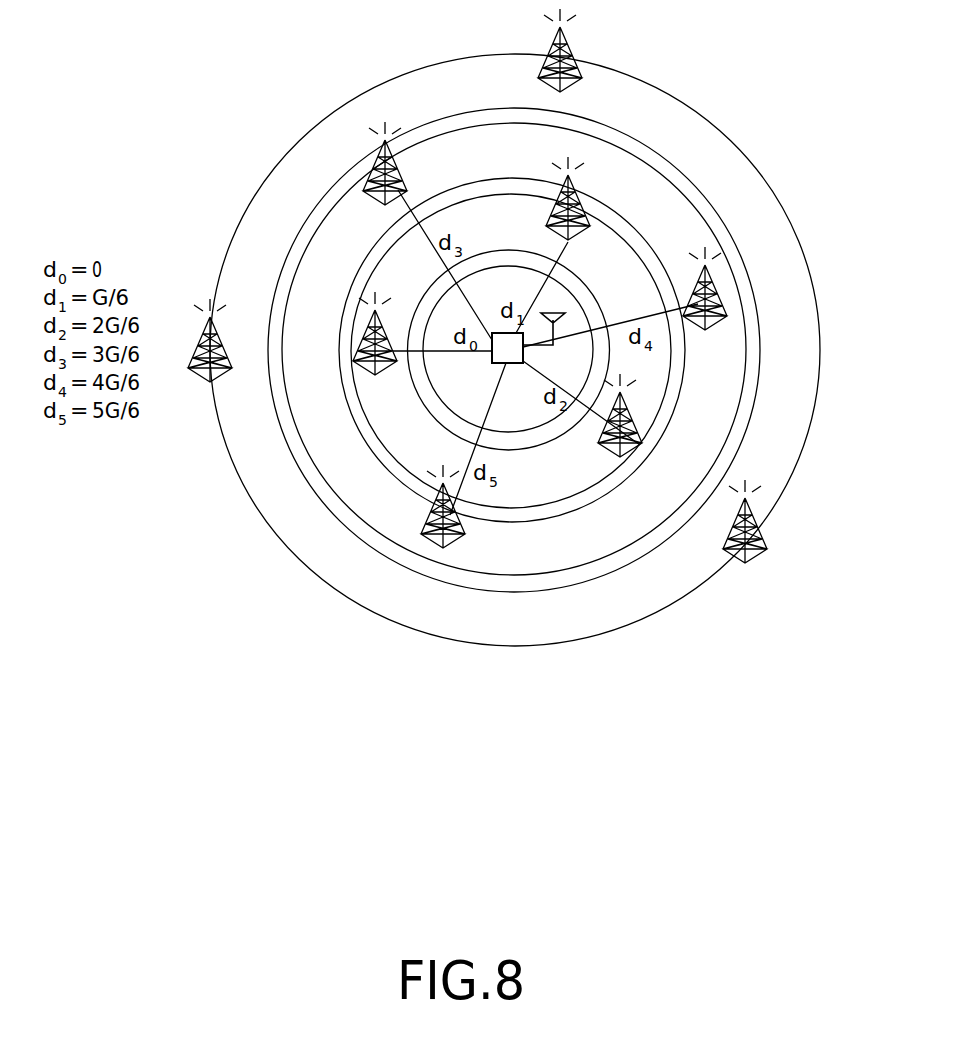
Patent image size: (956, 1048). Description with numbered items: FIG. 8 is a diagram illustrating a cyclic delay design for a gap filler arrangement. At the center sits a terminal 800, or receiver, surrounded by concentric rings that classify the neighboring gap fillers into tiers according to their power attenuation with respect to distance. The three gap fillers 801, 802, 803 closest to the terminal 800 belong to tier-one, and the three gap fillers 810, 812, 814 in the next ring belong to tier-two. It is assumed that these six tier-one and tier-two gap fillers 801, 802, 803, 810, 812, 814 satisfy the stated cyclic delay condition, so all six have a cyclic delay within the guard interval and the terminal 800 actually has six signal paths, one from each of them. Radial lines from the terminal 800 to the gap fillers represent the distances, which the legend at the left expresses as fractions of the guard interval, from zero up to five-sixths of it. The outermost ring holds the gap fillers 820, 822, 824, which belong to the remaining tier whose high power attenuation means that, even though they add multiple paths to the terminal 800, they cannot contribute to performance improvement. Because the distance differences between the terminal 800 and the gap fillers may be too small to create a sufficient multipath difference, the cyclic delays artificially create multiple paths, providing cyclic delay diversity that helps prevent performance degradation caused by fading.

The terminal 800 is at (512, 363).
The tier-1 gap filler 801 is at (586, 211).
The tier-1 gap filler 802 is at (386, 329).
The tier-1 gap filler 803 is at (636, 428).
The tier-2 gap filler 810 is at (722, 300).
The tier-2 gap filler 812 is at (402, 171).
The tier-2 gap filler 814 is at (459, 516).
The third tier base station 820 is at (578, 58).
The third tier base station 822 is at (226, 350).
The third tier base station 824 is at (761, 531).